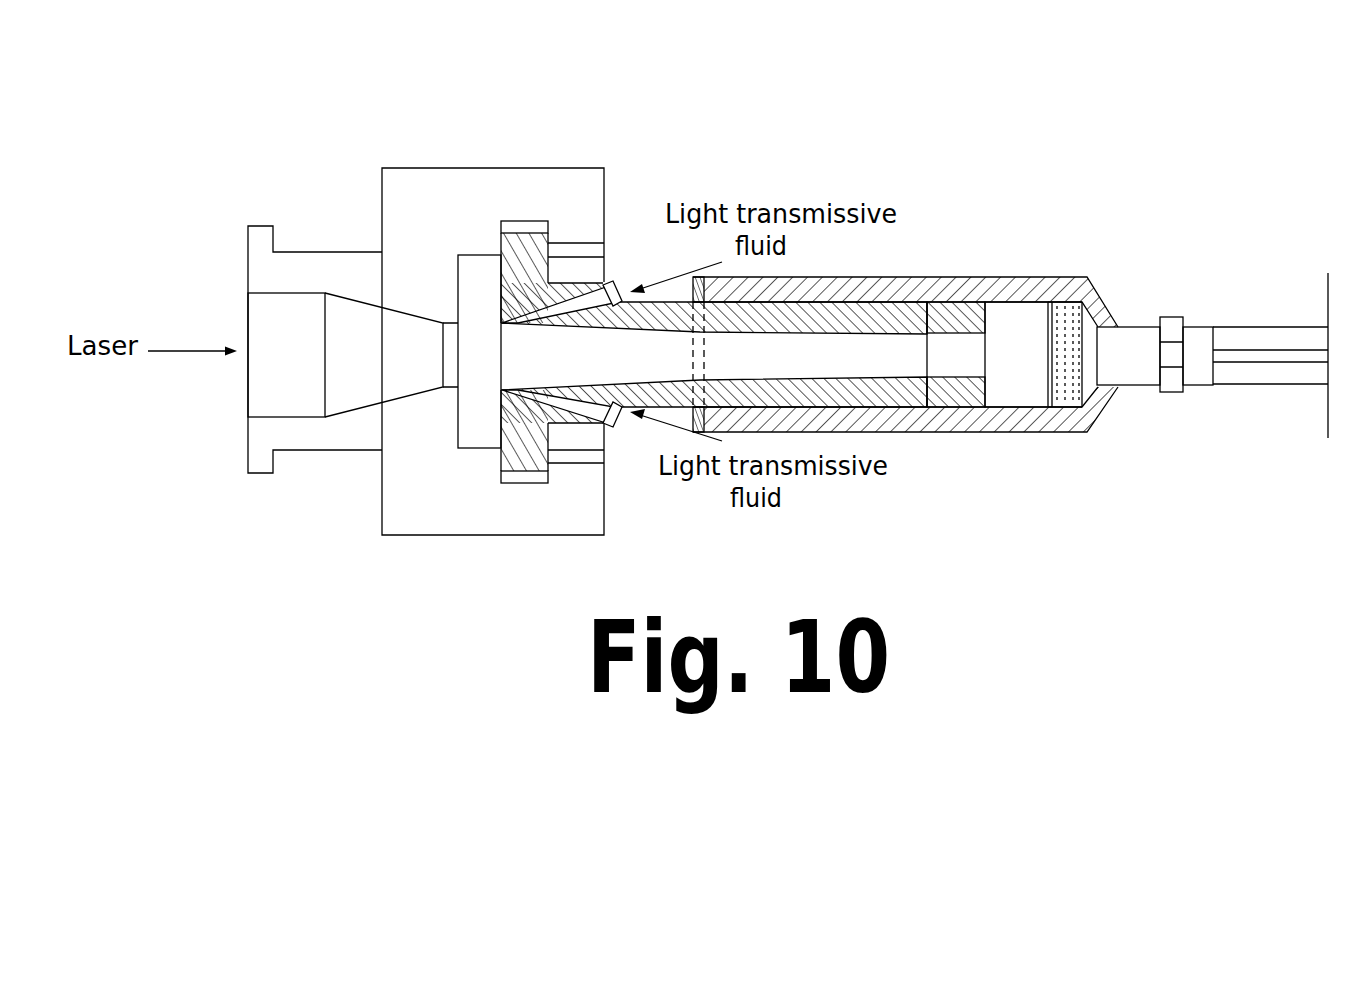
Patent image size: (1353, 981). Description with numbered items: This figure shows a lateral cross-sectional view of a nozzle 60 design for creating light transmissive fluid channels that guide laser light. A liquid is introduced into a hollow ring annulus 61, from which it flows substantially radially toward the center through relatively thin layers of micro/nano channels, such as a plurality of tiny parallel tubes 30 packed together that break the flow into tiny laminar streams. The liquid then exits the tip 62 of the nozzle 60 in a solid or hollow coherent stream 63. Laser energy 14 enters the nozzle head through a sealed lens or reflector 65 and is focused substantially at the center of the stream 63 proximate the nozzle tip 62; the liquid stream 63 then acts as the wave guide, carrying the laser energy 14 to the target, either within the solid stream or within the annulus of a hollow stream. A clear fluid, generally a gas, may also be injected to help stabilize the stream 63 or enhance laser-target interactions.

The nozzle 60 is at (802, 108).
The hollow ring annulus 61 is at (520, 222).
The sealed lens or reflector 65 is at (477, 448).
The tiny parallel tubes 30 is at (1095, 304).
The nozzle tip 62 is at (1198, 392).
The coherent stream 63 is at (1252, 327).
The laser energy 14 is at (1263, 362).